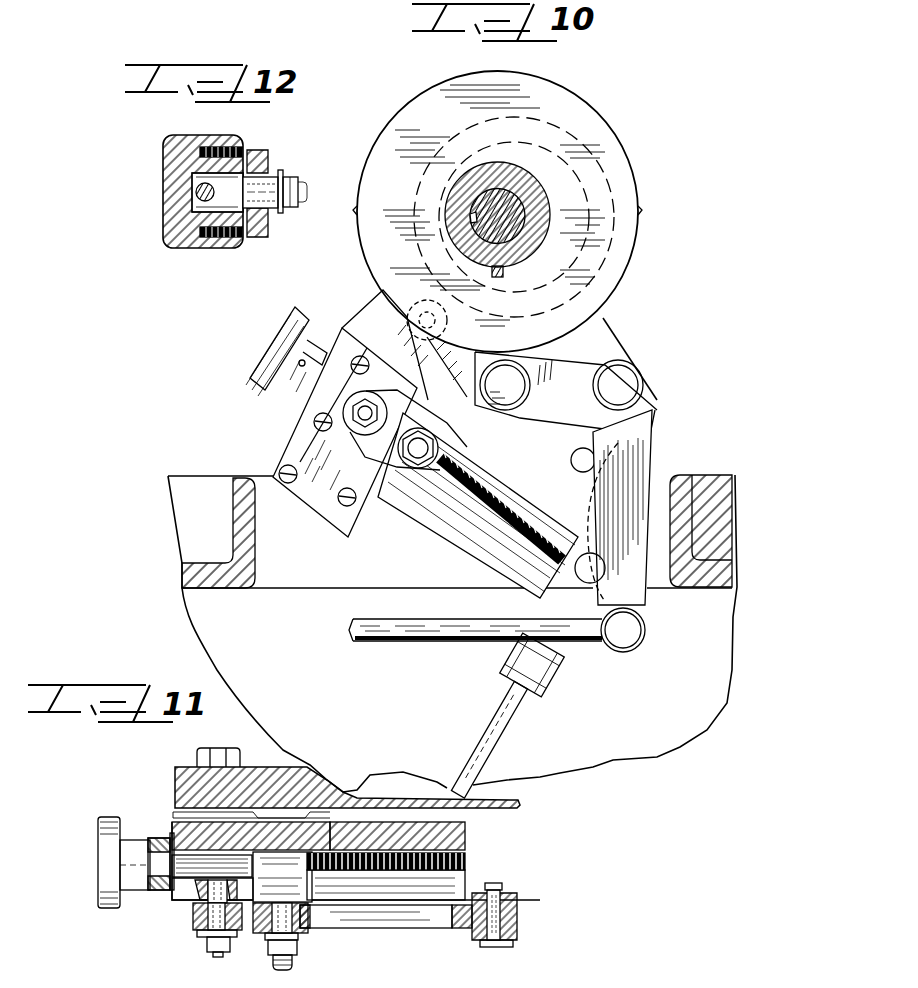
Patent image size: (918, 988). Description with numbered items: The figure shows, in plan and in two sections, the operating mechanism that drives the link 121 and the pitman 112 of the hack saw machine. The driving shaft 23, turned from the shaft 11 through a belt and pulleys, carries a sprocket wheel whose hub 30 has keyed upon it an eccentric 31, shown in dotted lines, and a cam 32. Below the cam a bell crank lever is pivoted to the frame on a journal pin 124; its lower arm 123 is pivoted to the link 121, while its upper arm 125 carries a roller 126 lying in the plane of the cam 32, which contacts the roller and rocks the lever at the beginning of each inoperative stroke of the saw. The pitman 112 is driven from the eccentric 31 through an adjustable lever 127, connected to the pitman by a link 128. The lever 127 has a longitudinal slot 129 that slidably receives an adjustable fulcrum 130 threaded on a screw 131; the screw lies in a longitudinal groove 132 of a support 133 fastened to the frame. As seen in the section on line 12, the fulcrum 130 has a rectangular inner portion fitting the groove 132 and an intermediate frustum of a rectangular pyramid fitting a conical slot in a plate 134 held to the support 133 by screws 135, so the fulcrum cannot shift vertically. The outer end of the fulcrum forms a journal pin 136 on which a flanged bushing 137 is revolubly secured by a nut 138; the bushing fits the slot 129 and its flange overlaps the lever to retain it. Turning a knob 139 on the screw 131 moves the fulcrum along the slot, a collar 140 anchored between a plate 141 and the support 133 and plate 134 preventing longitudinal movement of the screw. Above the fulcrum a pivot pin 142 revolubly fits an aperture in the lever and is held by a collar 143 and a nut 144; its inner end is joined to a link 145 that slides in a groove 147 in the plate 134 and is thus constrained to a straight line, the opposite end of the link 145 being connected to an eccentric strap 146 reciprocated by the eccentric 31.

In FIG. 10, the shaft 11 is at (261, 339).
In FIG. 10, the section line 12— 12 is at (388, 504).
In FIG. 10, the driving shaft 23 is at (500, 213).
In FIG. 10, the hub 30 is at (532, 222).
In FIG. 10, the eccentric 31 is at (600, 258).
In FIG. 10, the cam 32 is at (633, 187).
In FIG. 10, the pitman 112 is at (487, 737).
In FIG. 10, the link 121 is at (393, 641).
In FIG. 10, the lower arm 123 is at (640, 547).
In FIG. 10, the journal pin 124 is at (628, 405).
In FIG. 10, the upper arm 125 is at (575, 380).
In FIG. 10, the roller 126 is at (570, 460).
In FIG. 10, the adjustable lever 127 is at (463, 500).
In FIG. 11, the adjustable lever 127 is at (410, 917).
In FIG. 10, the link 128 is at (577, 607).
In FIG. 10, the longitudinal slot 129 is at (518, 548).
In FIG. 10, the adjustable fulcrum 130 is at (438, 450).
In FIG. 12, the adjustable fulcrum 130 is at (223, 190).
In FIG. 11, the adjustable fulcrum 130 is at (303, 925).
In FIG. 10, the screw 131 is at (450, 495).
In FIG. 11, the screw 131 is at (377, 873).
In FIG. 12, the longitudinal groove 132 is at (197, 218).
In FIG. 11, the longitudinal groove 132 is at (457, 847).
In FIG. 12, the support 133 is at (175, 168).
In FIG. 11, the support 133 is at (173, 823).
In FIG. 10, the plate 134 is at (480, 527).
In FIG. 12, the plate 134 is at (233, 247).
In FIG. 11, the plate 134 is at (453, 890).
In FIG. 12, the screws 135 is at (202, 248).
In FIG. 12, the journal pin 136 is at (278, 182).
In FIG. 10, the flanged bushing 137 is at (387, 458).
In FIG. 12, the flanged bushing 137 is at (281, 213).
In FIG. 12, the nut 138 is at (283, 204).
In FIG. 11, the nut 138 is at (258, 938).
In FIG. 11, the knob 139 is at (98, 853).
In FIG. 11, the collar 140 is at (163, 890).
In FIG. 10, the plate 141 is at (287, 413).
In FIG. 11, the plate 141 is at (157, 887).
In FIG. 10, the pivot pin 142 is at (380, 322).
In FIG. 11, the pivot pin 142 is at (211, 952).
In FIG. 11, the collar 143 is at (207, 900).
In FIG. 11, the nut 144 is at (220, 955).
In FIG. 11, the link 145 is at (165, 838).
In FIG. 10, the eccentric strap 146 is at (545, 133).
In FIG. 10, the groove 147 is at (295, 443).